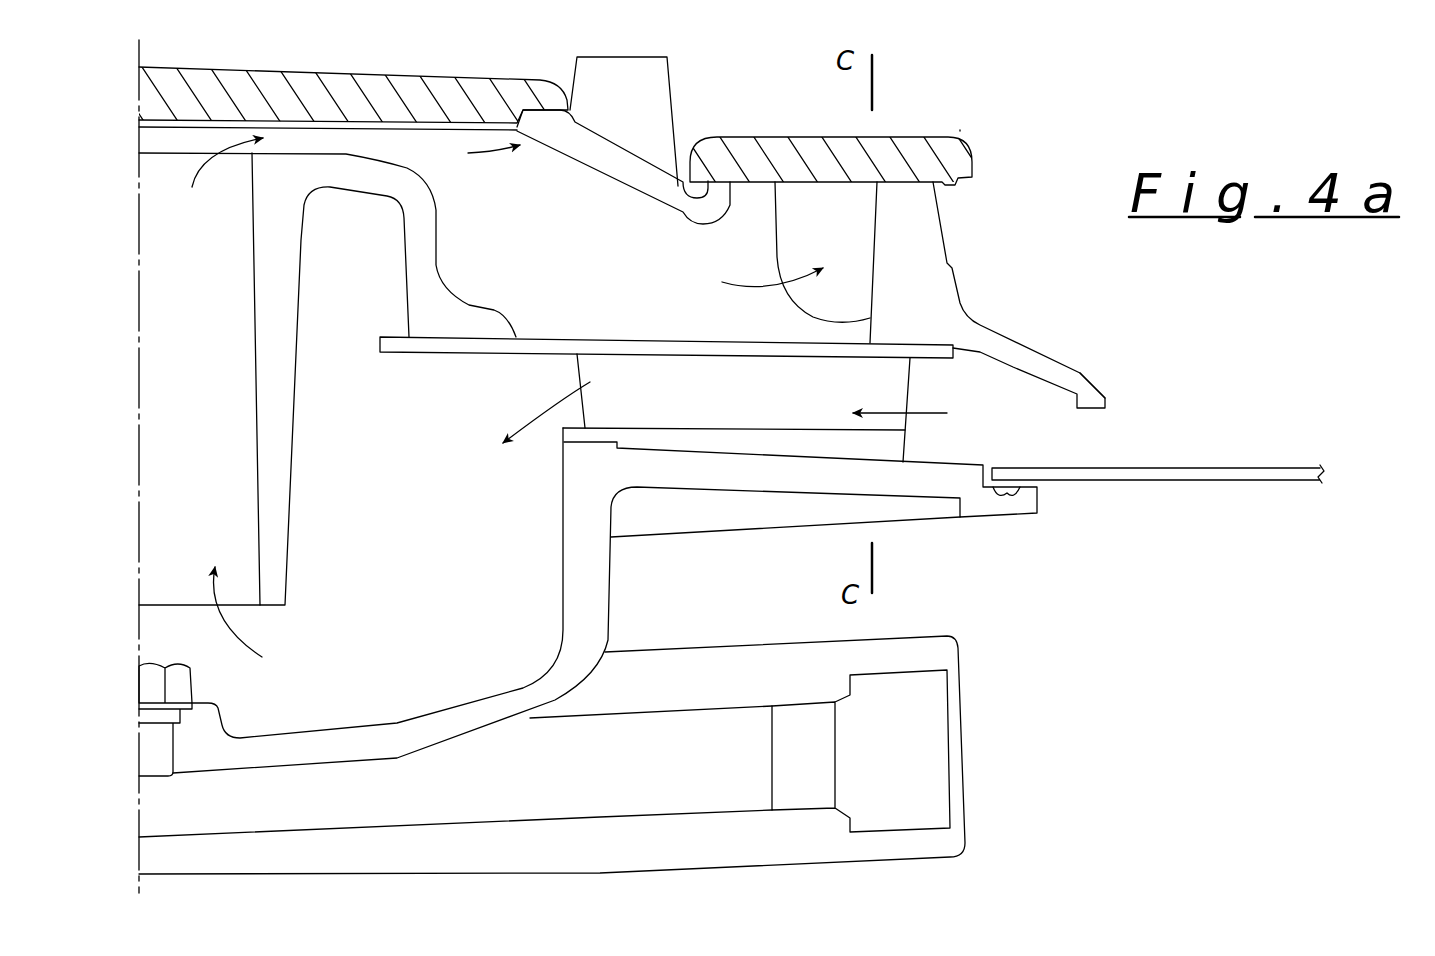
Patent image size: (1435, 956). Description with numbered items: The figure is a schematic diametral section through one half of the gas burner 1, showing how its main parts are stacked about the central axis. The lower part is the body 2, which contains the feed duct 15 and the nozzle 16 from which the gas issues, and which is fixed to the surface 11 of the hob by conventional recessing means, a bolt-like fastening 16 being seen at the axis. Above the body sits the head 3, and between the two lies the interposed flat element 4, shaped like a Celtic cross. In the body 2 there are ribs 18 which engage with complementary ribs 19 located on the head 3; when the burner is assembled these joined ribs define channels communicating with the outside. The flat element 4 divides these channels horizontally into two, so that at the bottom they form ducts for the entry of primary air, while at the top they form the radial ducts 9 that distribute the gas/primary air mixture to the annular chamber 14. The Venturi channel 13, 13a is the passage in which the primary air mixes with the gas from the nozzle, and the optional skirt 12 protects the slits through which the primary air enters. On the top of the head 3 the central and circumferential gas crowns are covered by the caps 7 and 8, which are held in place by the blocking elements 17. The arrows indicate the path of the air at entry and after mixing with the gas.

The burner 1 is at (965, 121).
The body 2 is at (693, 540).
The head 3 is at (623, 173).
The interposed flat element 4 is at (940, 357).
The cap 7 is at (467, 86).
The cap 8 is at (791, 148).
The radial ducts 9 is at (592, 267).
The surface 11 is at (1270, 473).
The skirt 12 is at (1084, 384).
The Venturi channel 13 is at (163, 425).
The Venturi channel 13a is at (320, 138).
The annular chamber 14 is at (848, 239).
The feed duct 15 is at (943, 652).
The nozzle 16 is at (150, 689).
The blocking elements 17 is at (623, 77).
The ribs 18 is at (873, 447).
The complementary ribs 19 is at (760, 406).